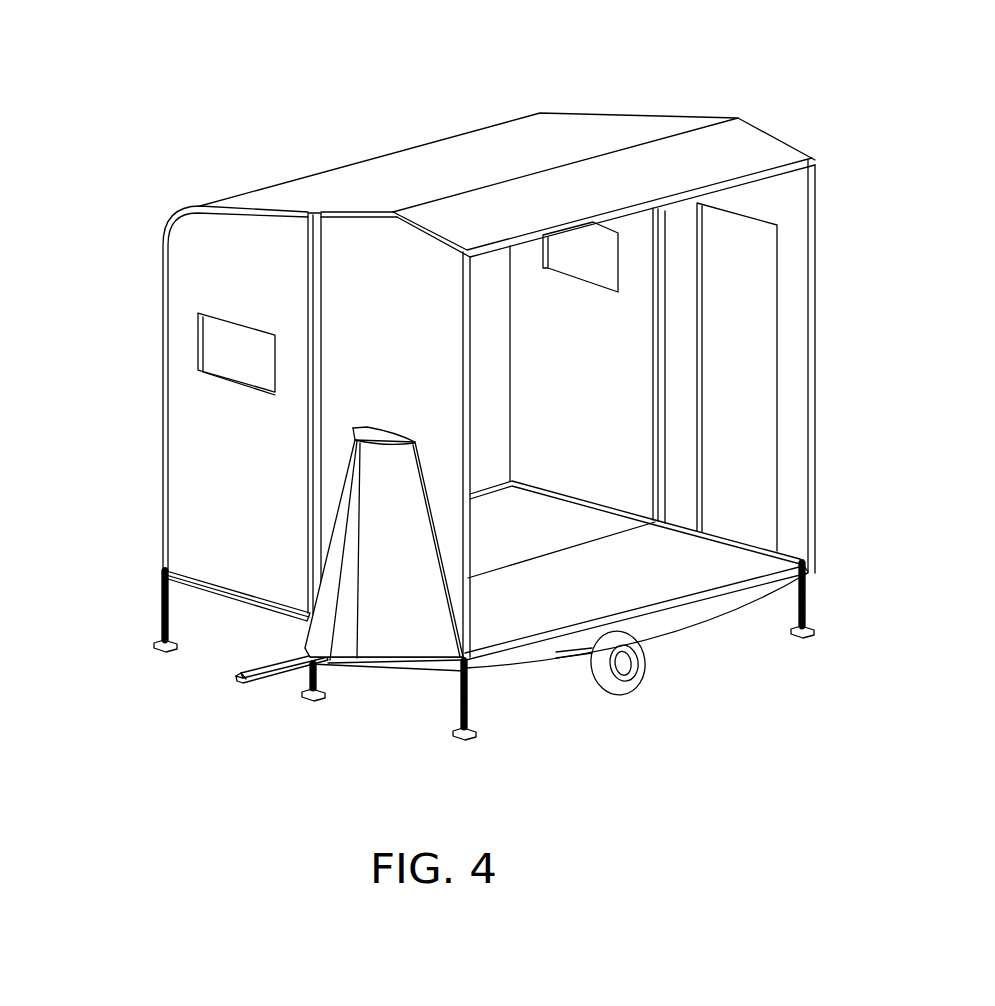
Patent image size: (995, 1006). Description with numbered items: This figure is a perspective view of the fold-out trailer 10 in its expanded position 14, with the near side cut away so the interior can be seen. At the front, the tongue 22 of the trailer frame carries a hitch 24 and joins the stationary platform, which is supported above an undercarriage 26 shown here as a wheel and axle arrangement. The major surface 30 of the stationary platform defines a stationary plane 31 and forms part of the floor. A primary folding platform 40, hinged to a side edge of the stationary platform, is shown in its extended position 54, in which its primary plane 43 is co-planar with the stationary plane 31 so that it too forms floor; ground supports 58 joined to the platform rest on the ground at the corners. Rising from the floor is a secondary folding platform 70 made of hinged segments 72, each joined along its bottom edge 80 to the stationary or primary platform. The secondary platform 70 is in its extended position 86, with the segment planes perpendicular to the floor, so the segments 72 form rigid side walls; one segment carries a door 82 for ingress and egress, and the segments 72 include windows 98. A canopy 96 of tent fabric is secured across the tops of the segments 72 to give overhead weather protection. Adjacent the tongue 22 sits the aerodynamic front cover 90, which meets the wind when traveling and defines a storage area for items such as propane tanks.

The fold-out trailer 10 is at (350, 78).
The expanded position 14 is at (593, 98).
The tongue 22 is at (283, 675).
The hitch 24 is at (248, 687).
The undercarriage 26 is at (657, 713).
The major surface 30 is at (530, 611).
The stationary plane 31 is at (615, 603).
The primary folding platform 40 is at (548, 513).
The primary plane 43 is at (503, 558).
The extended position 54 is at (593, 513).
The ground supports 58 is at (162, 598).
The secondary folding platform 70 is at (365, 332).
The segment 72 is at (220, 469).
The bottom edge 80 is at (228, 600).
The door 82 is at (720, 326).
The extended position 86 is at (138, 463).
The front cover 90 is at (387, 619).
The canopy 96 is at (450, 179).
The windows 98 is at (232, 364).